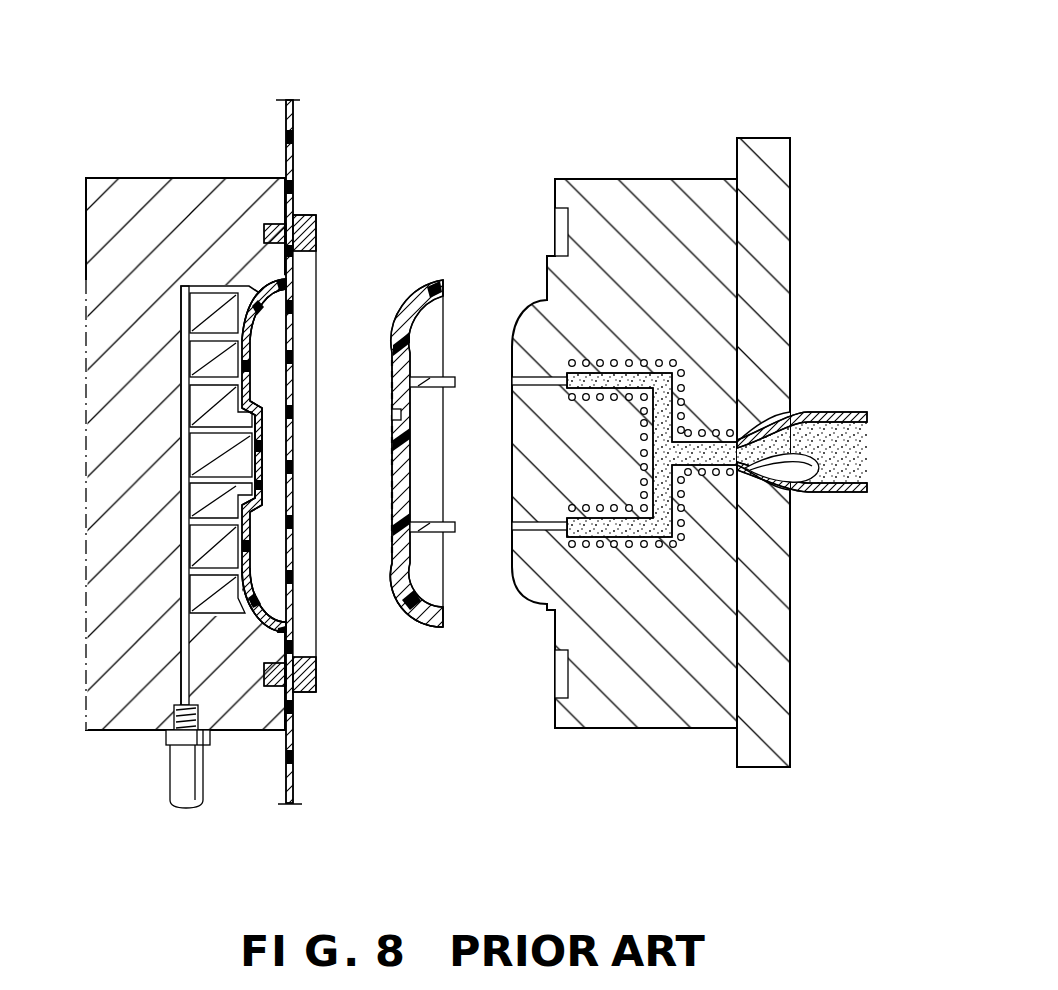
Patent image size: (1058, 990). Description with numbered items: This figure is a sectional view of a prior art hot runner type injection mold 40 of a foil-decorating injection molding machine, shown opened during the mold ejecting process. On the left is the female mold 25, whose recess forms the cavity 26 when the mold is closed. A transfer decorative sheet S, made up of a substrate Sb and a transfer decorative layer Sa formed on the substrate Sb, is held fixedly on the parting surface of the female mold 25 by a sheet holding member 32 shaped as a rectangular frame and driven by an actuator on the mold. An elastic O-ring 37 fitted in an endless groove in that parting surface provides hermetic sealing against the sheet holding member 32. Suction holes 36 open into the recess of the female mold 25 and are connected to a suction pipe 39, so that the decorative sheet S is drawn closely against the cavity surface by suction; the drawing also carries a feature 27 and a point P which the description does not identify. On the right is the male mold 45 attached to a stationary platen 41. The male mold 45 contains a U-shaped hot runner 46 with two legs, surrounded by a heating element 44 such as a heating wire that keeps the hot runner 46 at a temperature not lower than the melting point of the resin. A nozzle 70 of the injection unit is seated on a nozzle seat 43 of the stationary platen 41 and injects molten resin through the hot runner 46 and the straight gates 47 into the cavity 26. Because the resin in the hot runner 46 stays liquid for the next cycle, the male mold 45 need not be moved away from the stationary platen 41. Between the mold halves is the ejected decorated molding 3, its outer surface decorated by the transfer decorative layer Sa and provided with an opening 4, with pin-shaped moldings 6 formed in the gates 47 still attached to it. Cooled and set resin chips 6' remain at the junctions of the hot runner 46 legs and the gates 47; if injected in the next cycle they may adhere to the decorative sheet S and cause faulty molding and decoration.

The female mold 25 is at (135, 174).
The transfer decorative sheet S is at (287, 130).
The elastic O-ring 37 is at (266, 227).
The sheet holding member 32 is at (317, 233).
The cavity 26 is at (254, 318).
The substrate Sb is at (250, 365).
The suction holes 36 is at (194, 482).
The protruding portion 27 is at (252, 456).
The transfer decorative layer Sa is at (396, 580).
The suction pipe 39 is at (176, 779).
The decorated molding 3 is at (427, 270).
The opening 4 is at (392, 414).
The pin-shaped moldings 6 is at (448, 463).
The bottom portion of article P is at (432, 608).
The injection mold 40 is at (513, 104).
The male mold 45 is at (644, 172).
The hot runner 46 is at (627, 530).
The straight gates 47 is at (512, 380).
The resin chips 6' is at (579, 459).
The heating element 44 is at (658, 360).
The stationary platen 41 is at (768, 143).
The nozzle 70 is at (829, 412).
The nozzle seat 43 is at (816, 490).